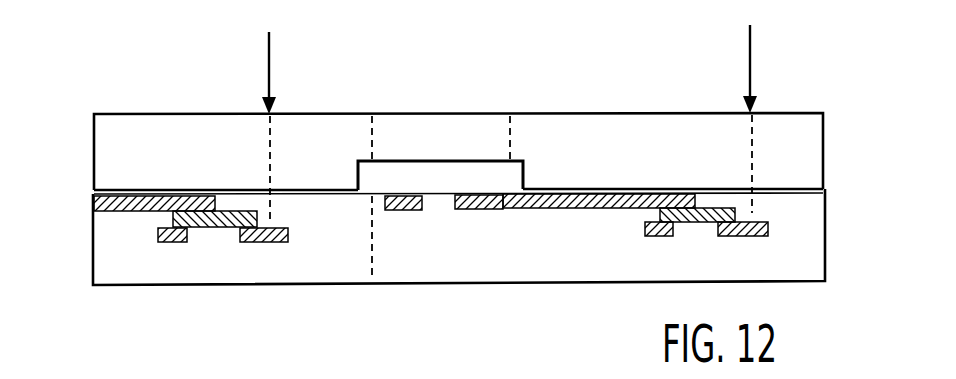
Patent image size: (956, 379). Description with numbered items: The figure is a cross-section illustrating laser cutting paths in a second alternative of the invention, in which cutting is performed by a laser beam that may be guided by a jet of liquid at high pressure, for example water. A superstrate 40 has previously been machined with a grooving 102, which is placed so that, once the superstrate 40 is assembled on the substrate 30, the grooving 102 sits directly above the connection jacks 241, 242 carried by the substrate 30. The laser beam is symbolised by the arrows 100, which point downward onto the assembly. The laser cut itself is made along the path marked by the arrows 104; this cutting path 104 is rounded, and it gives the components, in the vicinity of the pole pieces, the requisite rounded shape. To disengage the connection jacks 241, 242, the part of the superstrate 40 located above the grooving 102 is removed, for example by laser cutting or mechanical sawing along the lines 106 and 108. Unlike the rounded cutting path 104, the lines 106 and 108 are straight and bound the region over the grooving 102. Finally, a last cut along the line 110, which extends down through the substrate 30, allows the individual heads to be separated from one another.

The laser beam 100 is at (268, 53).
The cutting path 104 is at (268, 135).
The line 108 is at (372, 133).
The grooving 102 is at (412, 165).
The line 106 is at (510, 133).
The superstrate 40 is at (108, 140).
The substrate 30 is at (110, 243).
The connection jack 242 is at (411, 212).
The connection jack 241 is at (492, 209).
The line 110 is at (373, 260).